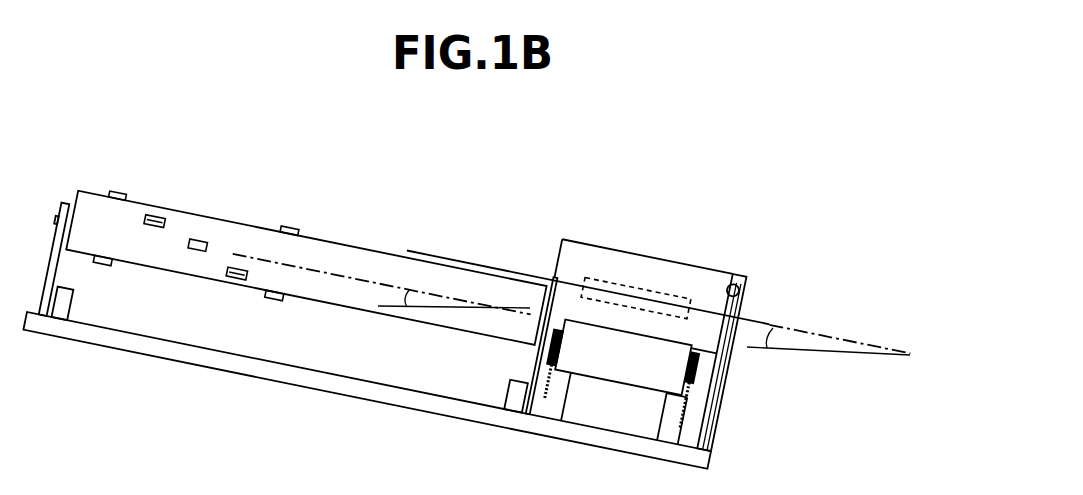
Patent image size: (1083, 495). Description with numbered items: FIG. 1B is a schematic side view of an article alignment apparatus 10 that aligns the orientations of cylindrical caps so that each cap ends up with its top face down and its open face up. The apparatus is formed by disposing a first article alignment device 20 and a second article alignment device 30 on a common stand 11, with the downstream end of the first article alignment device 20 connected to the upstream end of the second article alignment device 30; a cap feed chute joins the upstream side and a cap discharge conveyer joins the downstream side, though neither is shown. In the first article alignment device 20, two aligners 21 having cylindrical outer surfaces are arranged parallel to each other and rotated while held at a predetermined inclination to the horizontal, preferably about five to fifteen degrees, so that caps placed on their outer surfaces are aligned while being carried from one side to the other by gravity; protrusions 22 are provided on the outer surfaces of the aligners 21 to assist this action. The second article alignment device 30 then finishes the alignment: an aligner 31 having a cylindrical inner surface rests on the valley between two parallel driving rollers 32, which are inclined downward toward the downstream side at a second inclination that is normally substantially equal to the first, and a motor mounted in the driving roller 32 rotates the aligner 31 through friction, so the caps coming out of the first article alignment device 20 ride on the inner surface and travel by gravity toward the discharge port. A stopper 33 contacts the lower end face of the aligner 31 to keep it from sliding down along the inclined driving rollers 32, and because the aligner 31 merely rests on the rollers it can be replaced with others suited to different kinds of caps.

The article alignment apparatus 10 is at (432, 204).
The stand 11 is at (292, 377).
The first article alignment device 20 is at (250, 215).
The aligner 21 is at (367, 265).
The protrusion 22 is at (195, 252).
The second article alignment device 30 is at (644, 243).
The aligner 31 is at (695, 265).
The driving roller 32 is at (618, 367).
The stopper 33 is at (744, 290).